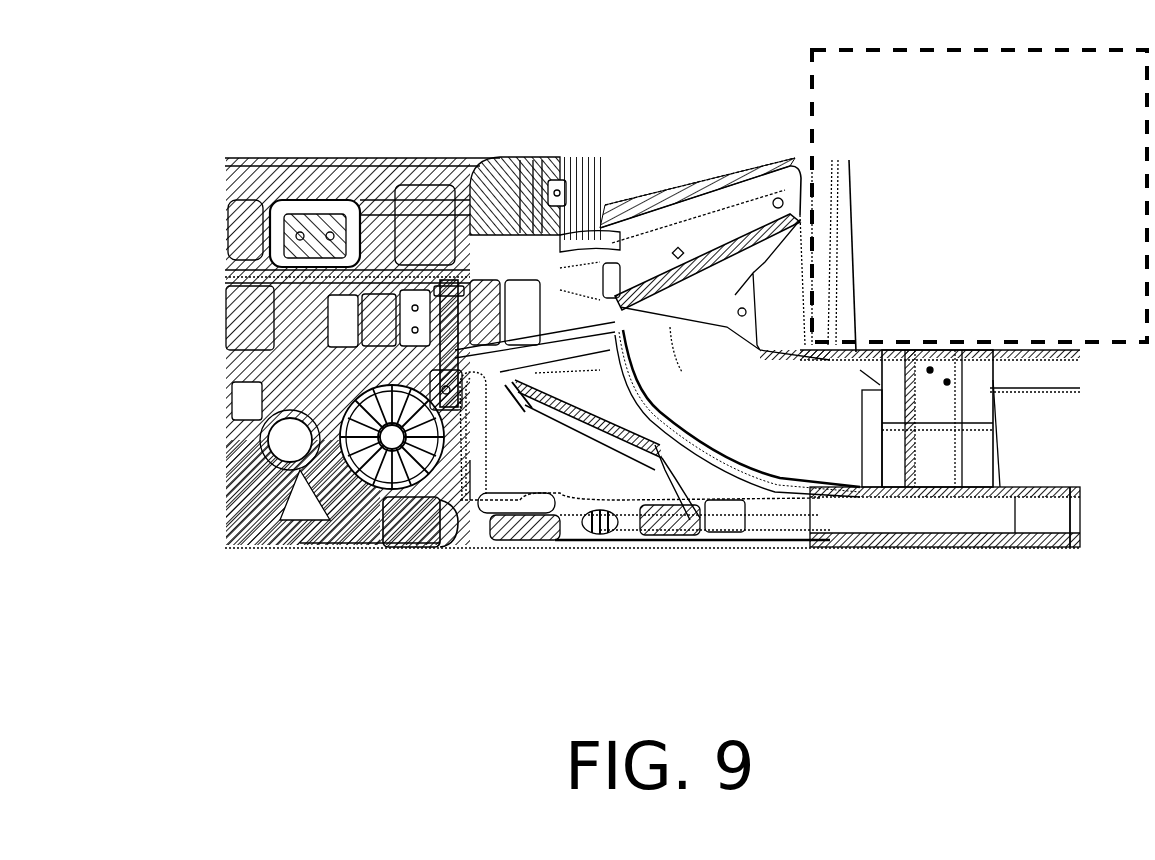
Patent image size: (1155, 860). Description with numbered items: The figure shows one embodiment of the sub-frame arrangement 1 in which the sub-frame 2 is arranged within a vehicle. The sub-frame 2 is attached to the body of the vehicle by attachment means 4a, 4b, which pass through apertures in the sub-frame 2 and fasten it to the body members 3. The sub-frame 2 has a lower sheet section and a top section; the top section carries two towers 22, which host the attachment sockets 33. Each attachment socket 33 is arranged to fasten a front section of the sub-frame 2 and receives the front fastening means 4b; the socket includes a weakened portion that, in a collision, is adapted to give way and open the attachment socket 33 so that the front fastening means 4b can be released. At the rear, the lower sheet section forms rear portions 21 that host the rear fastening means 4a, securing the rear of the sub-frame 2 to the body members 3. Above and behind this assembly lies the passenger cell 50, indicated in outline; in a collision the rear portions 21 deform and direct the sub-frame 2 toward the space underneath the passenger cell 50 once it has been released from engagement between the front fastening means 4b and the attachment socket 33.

The sub-frame arrangement 1 is at (652, 352).
The sub-frame 2 is at (453, 540).
The body members 3 is at (498, 330).
The rear fastening means 4a is at (817, 548).
The front fastening means 4b is at (448, 330).
The rear portions 21 is at (788, 547).
The towers 22 is at (458, 447).
The attachment socket 33 is at (437, 382).
The passenger cell 50 is at (812, 140).